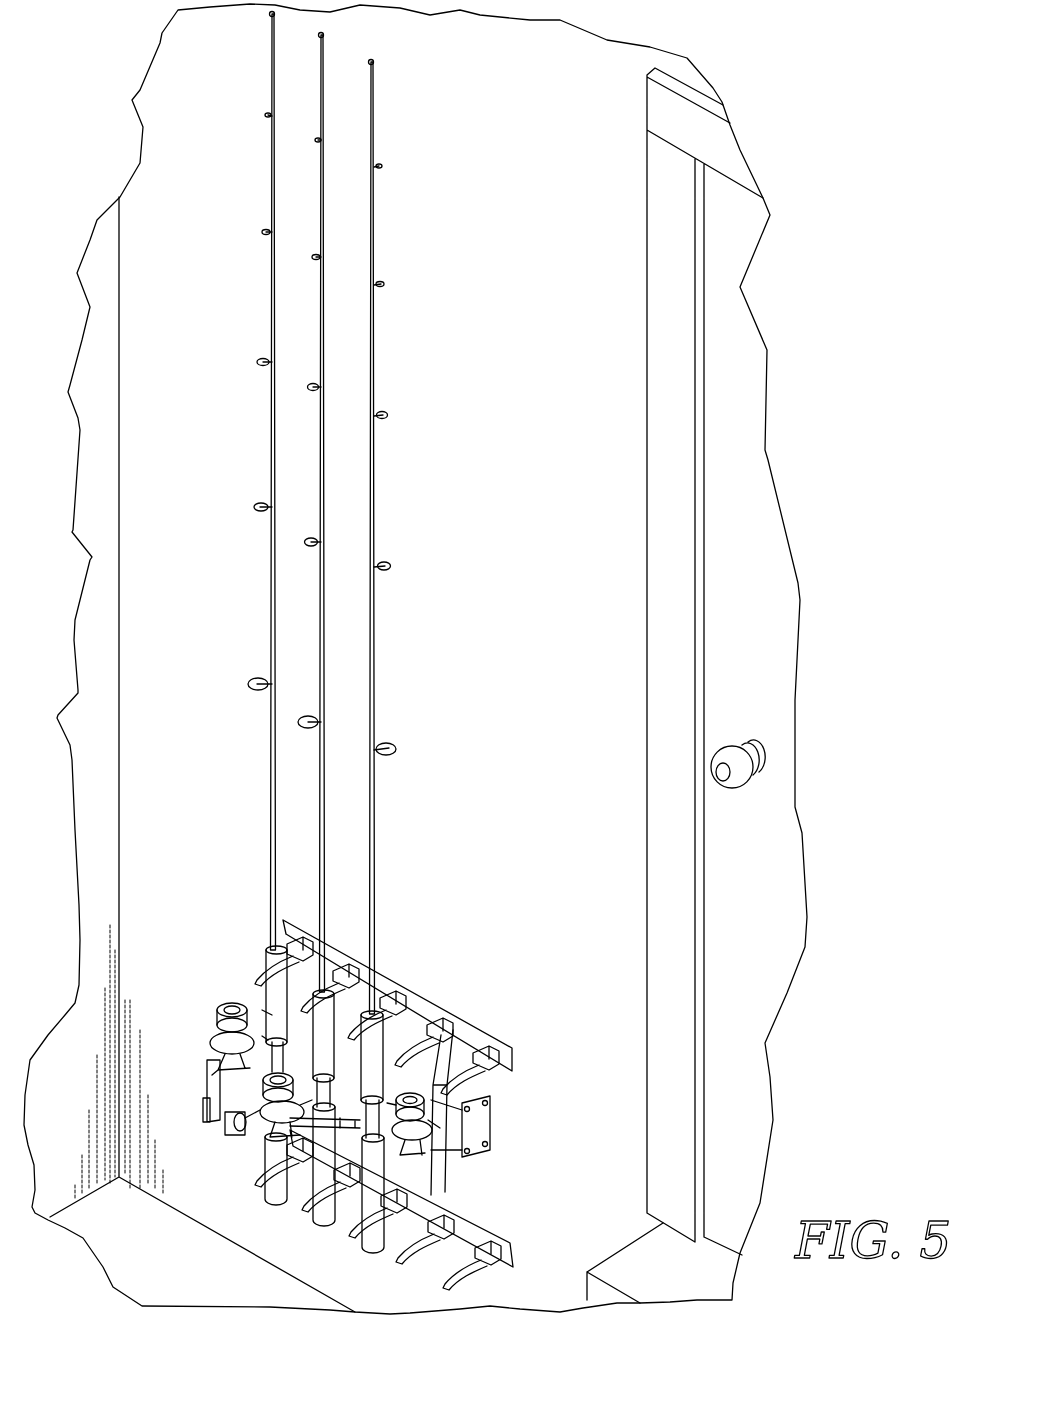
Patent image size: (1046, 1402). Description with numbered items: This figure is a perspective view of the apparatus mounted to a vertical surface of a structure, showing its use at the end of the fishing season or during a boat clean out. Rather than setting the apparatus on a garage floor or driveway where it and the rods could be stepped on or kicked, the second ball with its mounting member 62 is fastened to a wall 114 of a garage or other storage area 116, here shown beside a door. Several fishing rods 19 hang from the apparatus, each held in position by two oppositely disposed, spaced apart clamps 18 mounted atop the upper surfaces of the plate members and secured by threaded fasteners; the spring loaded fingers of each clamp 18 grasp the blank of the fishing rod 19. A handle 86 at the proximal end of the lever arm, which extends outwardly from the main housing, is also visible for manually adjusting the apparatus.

The wall 114 is at (482, 505).
The storage area 116 is at (600, 88).
The fishing rod 19 is at (378, 1067).
The clamp 18 is at (502, 1275).
The mounting member 62 is at (493, 1137).
The handle 86 is at (233, 1118).